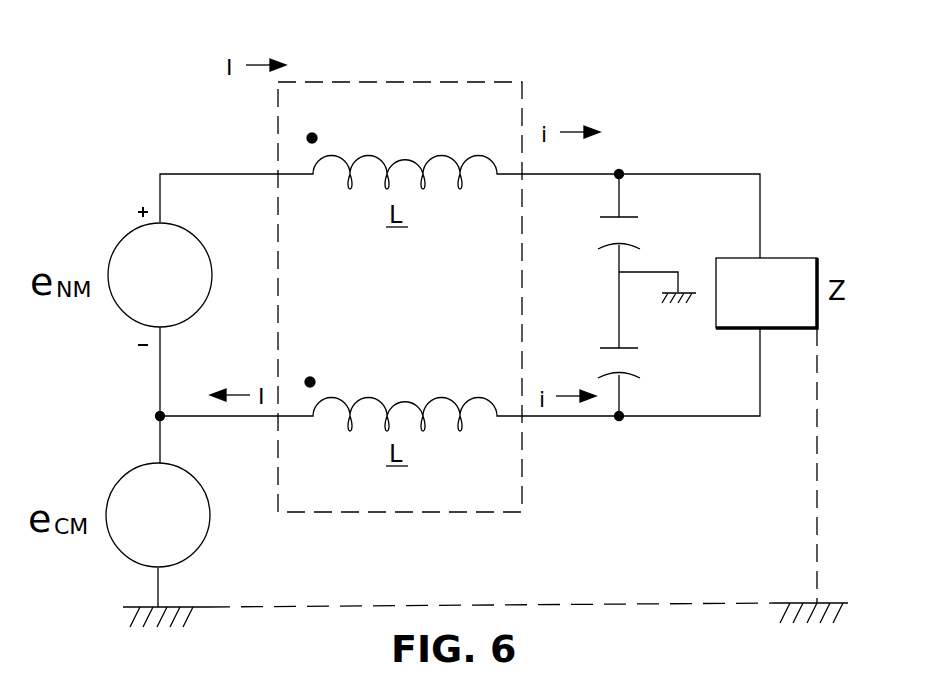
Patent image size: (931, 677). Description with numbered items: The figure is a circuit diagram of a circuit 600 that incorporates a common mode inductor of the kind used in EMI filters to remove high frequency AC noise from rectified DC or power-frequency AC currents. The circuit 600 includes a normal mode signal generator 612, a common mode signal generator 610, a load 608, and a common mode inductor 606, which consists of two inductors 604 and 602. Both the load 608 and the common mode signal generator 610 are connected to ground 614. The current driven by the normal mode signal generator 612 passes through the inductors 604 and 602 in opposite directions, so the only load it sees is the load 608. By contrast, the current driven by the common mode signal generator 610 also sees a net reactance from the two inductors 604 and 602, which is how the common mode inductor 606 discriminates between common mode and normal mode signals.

The circuit 600 is at (840, 371).
The inductor 602 is at (444, 396).
The inductor 604 is at (448, 154).
The common mode inductor 606 is at (452, 74).
The load 608 is at (786, 309).
The common mode signal generator 610 is at (121, 479).
The normal mode signal generator 612 is at (207, 240).
The ground 614 is at (648, 605).